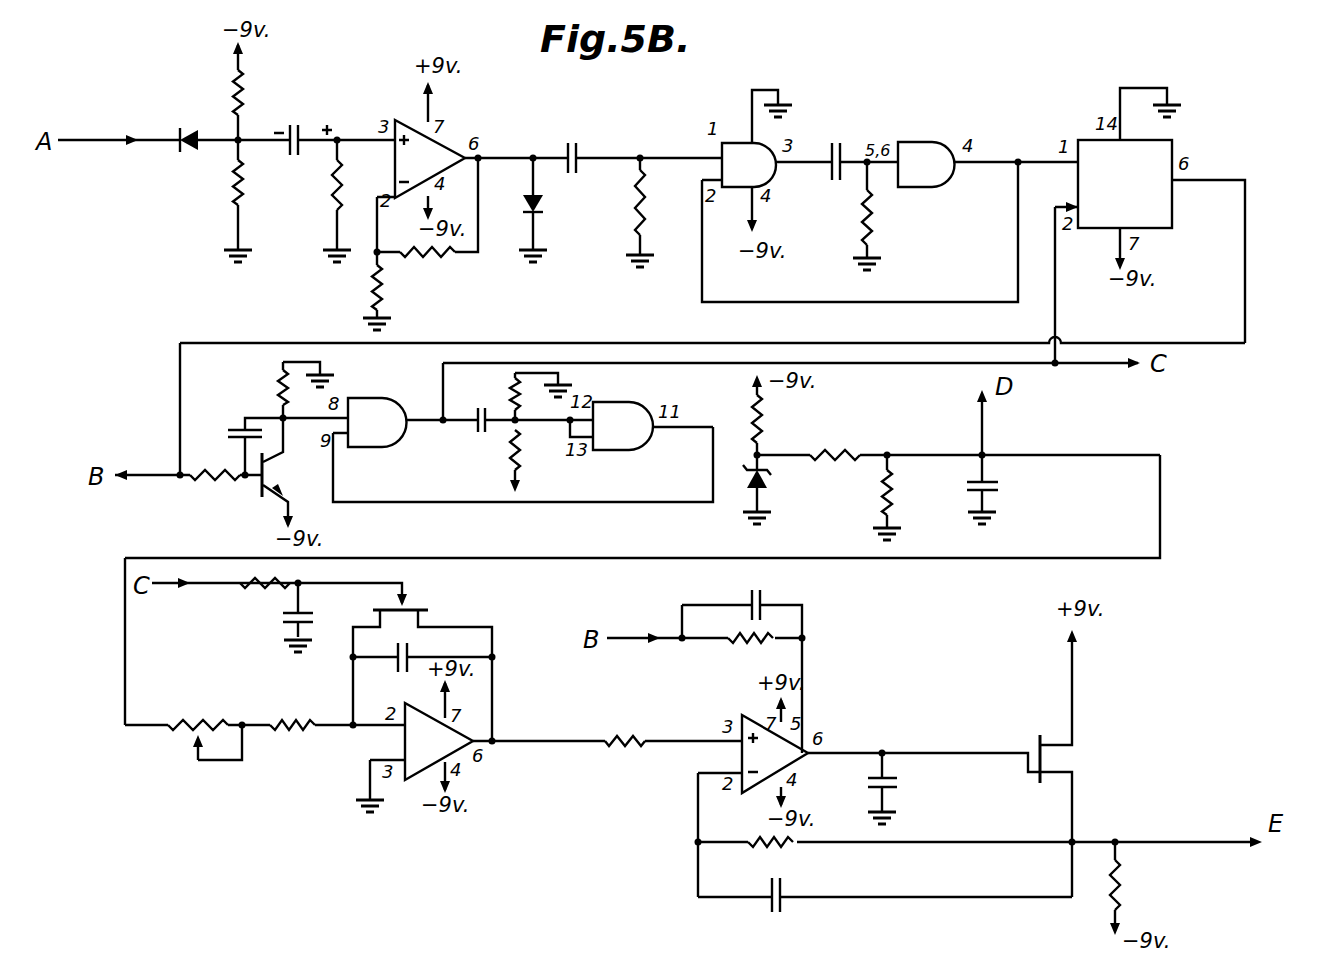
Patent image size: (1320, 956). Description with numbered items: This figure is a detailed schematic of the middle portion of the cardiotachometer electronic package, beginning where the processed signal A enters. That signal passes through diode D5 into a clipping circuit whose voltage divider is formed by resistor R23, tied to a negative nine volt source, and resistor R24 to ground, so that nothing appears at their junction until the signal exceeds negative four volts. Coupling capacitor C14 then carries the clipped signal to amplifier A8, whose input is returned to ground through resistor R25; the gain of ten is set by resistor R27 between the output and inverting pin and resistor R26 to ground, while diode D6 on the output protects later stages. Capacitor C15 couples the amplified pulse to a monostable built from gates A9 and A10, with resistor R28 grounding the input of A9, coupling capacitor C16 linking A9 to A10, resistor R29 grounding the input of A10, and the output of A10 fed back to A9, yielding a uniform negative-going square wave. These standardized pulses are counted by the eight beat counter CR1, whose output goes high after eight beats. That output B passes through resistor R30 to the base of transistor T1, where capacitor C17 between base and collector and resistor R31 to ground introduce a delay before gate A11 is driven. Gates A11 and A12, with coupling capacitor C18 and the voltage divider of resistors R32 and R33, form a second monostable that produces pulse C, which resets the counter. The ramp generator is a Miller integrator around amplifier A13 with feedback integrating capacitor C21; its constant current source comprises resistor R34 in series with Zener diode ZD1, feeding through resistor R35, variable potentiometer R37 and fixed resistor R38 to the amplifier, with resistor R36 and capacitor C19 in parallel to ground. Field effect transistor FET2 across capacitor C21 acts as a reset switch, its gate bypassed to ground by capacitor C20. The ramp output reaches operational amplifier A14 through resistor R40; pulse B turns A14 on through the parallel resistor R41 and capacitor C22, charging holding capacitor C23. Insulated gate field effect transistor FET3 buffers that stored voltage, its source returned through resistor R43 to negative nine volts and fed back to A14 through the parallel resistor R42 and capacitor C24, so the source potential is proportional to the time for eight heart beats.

The diode D5 is at (176, 150).
The resistor R23 is at (248, 96).
The resistor R24 is at (236, 192).
The coupling capacitor C14 is at (302, 127).
The resistor R25 is at (335, 207).
The amplifier A8 is at (428, 174).
The resistor R26 is at (372, 290).
The resistor R27 is at (432, 262).
The capacitor C15 is at (586, 128).
The diode D6 is at (542, 214).
The resistor R28 is at (636, 203).
The gate A9 is at (753, 176).
The coupling capacitor C16 is at (830, 147).
The gate A10 is at (933, 176).
The resistor R29 is at (876, 220).
The eight beat counter CR1 is at (1142, 196).
The resistor R30 is at (206, 484).
The capacitor C17 is at (228, 432).
The resistor R31 is at (277, 378).
The transistor T1 is at (278, 470).
The gate A11 is at (377, 422).
The coupling capacitor C18 is at (470, 433).
The resistor R32 is at (510, 402).
The resistor R33 is at (505, 462).
The gate A12 is at (623, 426).
The resistor R34 is at (763, 426).
The resistor R35 is at (840, 448).
The Zener diode ZD1 is at (765, 496).
The resistor R36 is at (893, 481).
The capacitor C19 is at (1003, 478).
The capacitor C20 is at (283, 620).
The field effect transistor FET2 is at (407, 609).
The feedback integrating capacitor C21 is at (411, 654).
The variable potentiometer R37 is at (230, 712).
The fixed resistor R38 is at (312, 712).
The amplifier A13 is at (439, 741).
The resistor R40 is at (645, 750).
The resistor R41 is at (752, 652).
The capacitor C22 is at (768, 600).
The operational amplifier A14 is at (778, 774).
The holding capacitor C23 is at (893, 778).
The insulated gate field effect transistor FET3 is at (1060, 752).
The resistor R42 is at (775, 850).
The capacitor C24 is at (778, 915).
The resistor R43 is at (1125, 892).